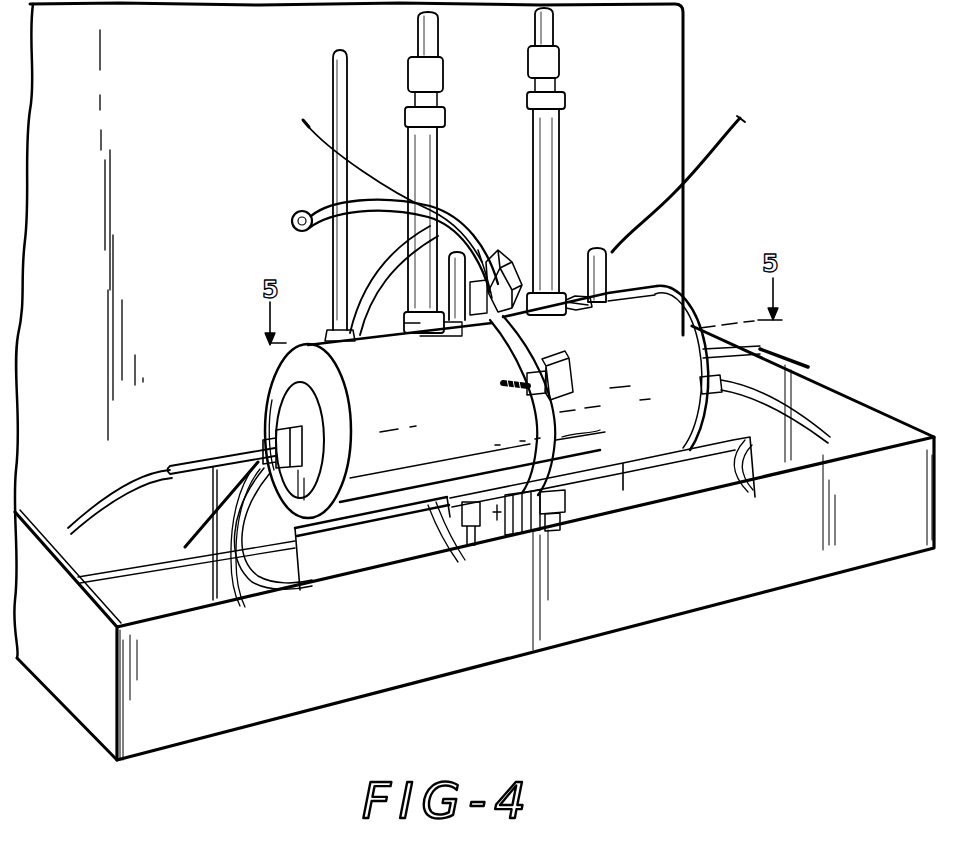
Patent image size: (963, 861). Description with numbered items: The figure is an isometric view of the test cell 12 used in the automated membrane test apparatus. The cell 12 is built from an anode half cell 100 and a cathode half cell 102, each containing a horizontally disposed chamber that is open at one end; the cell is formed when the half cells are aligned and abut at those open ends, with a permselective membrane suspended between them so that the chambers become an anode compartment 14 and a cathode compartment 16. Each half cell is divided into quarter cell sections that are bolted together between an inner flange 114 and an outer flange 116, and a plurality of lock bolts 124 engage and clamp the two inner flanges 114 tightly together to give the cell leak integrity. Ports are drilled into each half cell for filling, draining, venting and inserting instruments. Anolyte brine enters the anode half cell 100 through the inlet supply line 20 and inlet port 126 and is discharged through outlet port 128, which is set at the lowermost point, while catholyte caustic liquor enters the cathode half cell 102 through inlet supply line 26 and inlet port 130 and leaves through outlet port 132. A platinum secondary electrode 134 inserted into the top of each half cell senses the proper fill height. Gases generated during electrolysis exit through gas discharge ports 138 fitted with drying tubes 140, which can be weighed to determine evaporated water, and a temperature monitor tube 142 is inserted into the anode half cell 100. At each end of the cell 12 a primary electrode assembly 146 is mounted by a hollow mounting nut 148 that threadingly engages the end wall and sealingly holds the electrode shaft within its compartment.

The test cell 12 is at (600, 200).
The anode compartment 14 is at (394, 456).
The cathode compartment 16 is at (644, 430).
The inlet supply line 20 is at (362, 204).
The inlet supply line 26 is at (500, 242).
The anode half cell 100 is at (478, 446).
The cathode half cell 102 is at (654, 402).
The inner flange 114 is at (570, 435).
The outer flange 116 is at (272, 370).
The lock bolt 124 is at (571, 382).
The inlet port 126 is at (500, 255).
The outlet port 128 is at (468, 530).
The inlet port 130 is at (530, 312).
The outlet port 132 is at (560, 510).
The secondary electrode 134 is at (464, 312).
The gas discharge port 138 is at (573, 287).
The drying tube 140 is at (445, 70).
The temperature monitor tube 142 is at (331, 74).
The primary electrode assembly 146 is at (222, 455).
The hollow mounting nut 148 is at (284, 432).